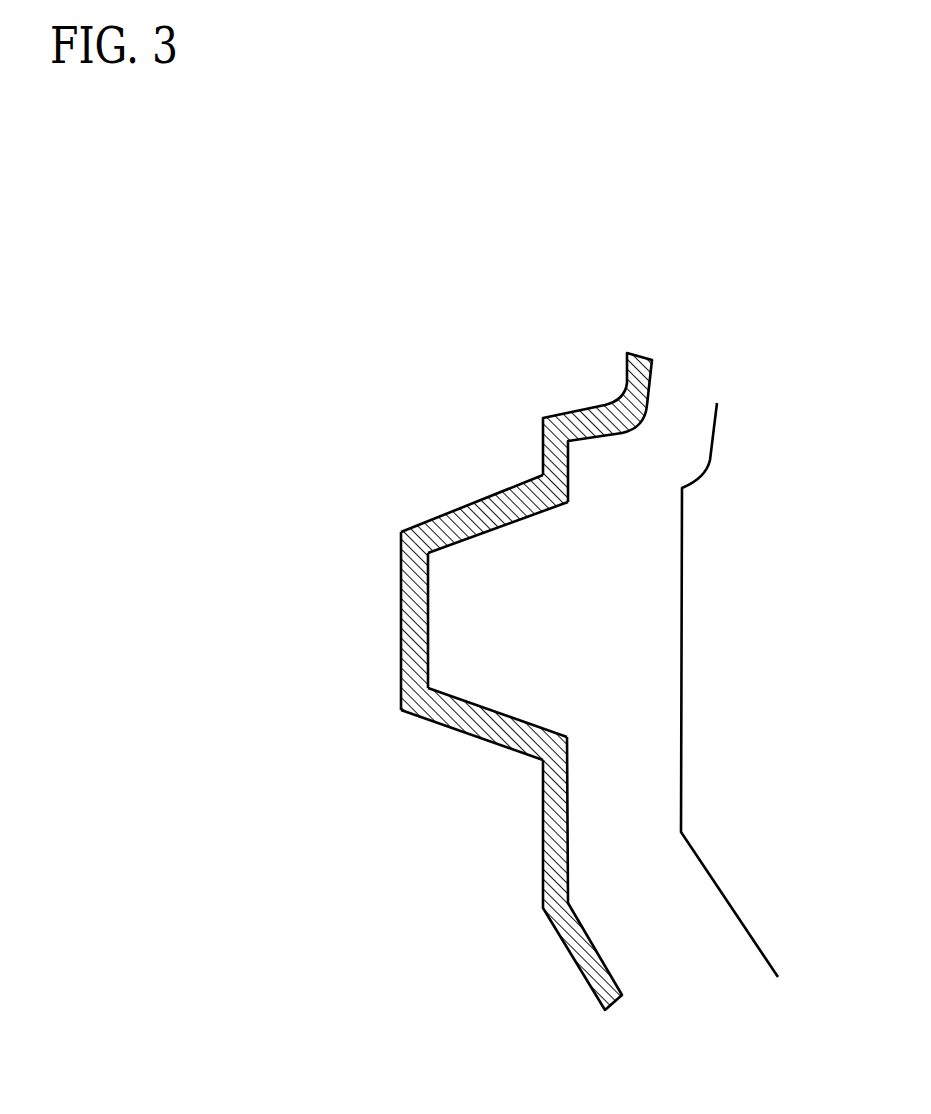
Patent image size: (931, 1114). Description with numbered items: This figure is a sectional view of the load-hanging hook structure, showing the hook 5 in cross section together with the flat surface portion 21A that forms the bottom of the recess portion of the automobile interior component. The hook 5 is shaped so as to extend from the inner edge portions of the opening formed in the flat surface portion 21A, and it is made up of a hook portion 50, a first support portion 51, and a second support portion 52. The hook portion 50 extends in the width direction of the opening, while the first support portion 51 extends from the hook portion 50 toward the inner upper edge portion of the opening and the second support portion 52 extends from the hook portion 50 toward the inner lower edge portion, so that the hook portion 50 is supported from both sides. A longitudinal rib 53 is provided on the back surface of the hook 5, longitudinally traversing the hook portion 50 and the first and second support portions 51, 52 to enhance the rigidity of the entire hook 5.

The hook 5 is at (356, 439).
The flat surface portion 21A is at (543, 443).
The hook portion 50 is at (402, 669).
The first support portion 51 is at (480, 508).
The second support portion 52 is at (485, 733).
The longitudinal rib 53 is at (682, 667).